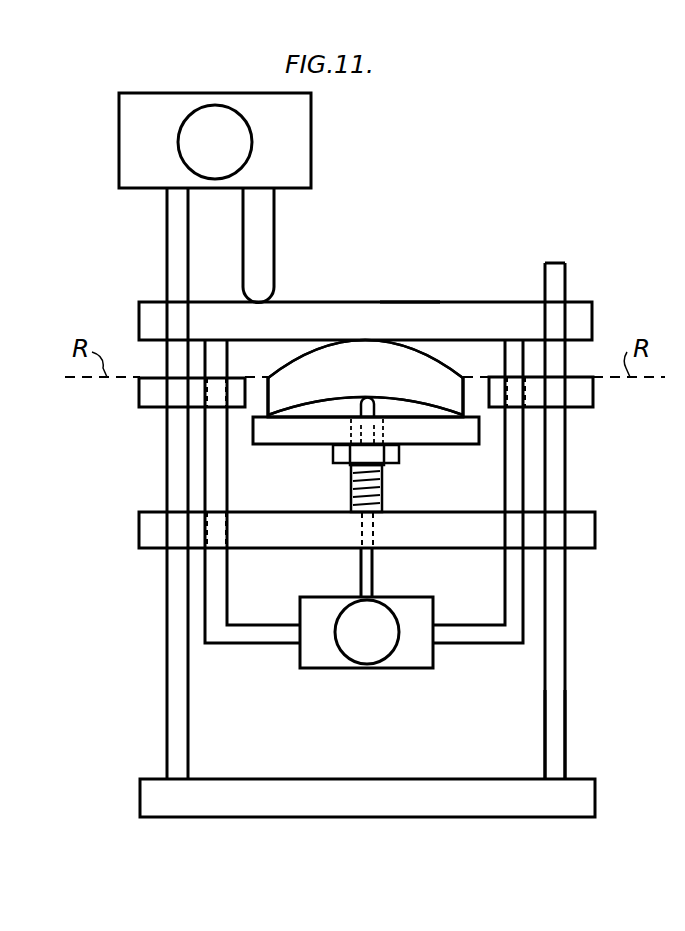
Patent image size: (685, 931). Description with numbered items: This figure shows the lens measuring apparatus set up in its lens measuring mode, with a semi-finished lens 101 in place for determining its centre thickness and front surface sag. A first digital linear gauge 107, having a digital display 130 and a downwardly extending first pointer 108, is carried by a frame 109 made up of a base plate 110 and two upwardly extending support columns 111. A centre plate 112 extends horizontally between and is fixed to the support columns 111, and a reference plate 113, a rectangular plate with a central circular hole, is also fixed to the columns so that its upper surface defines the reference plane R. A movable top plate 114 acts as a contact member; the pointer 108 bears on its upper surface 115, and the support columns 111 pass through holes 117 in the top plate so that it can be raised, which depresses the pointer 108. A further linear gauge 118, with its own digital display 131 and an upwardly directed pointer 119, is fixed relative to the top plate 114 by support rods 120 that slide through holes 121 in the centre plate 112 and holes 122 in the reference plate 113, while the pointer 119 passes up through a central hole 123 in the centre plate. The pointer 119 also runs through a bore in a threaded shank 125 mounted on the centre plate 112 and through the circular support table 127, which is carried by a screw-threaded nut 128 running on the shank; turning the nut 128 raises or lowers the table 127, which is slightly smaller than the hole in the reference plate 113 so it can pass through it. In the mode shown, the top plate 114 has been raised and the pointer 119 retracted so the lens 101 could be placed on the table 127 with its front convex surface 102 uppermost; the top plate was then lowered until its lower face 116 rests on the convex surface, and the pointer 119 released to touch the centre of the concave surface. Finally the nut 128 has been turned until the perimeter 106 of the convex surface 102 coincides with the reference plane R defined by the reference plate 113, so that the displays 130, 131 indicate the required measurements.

The semi-finished lens 101 is at (442, 368).
The front convex surface 102 is at (445, 368).
The perimeter of the convex surface 106 is at (268, 377).
The first digital linear gauge 107 is at (306, 150).
The first pointer 108 is at (276, 228).
The frame 109 is at (565, 743).
The base plate 110 is at (580, 792).
The support columns 111 is at (166, 235).
The centre plate 112 is at (587, 535).
The reference plate 113 is at (140, 398).
The movable top plate 114 is at (382, 309).
The upper surface of the top plate 115 is at (348, 301).
The lower face of the top plate 116 is at (256, 346).
The holes in the top plate 117 is at (178, 300).
The further linear gauge 118 is at (318, 660).
The pointer of the further gauge 119 is at (373, 568).
The support rods 120 is at (213, 588).
The holes in the centre plate 121 is at (217, 513).
The holes in the reference plate 122 is at (210, 403).
The central hole in the centre plate 123 is at (357, 537).
The threaded shank 125 is at (350, 497).
The support table 127 is at (432, 446).
The screw-threaded nut 128 is at (334, 452).
The digital display of the first gauge 130 is at (248, 132).
The digital display of the further gauge 131 is at (370, 650).